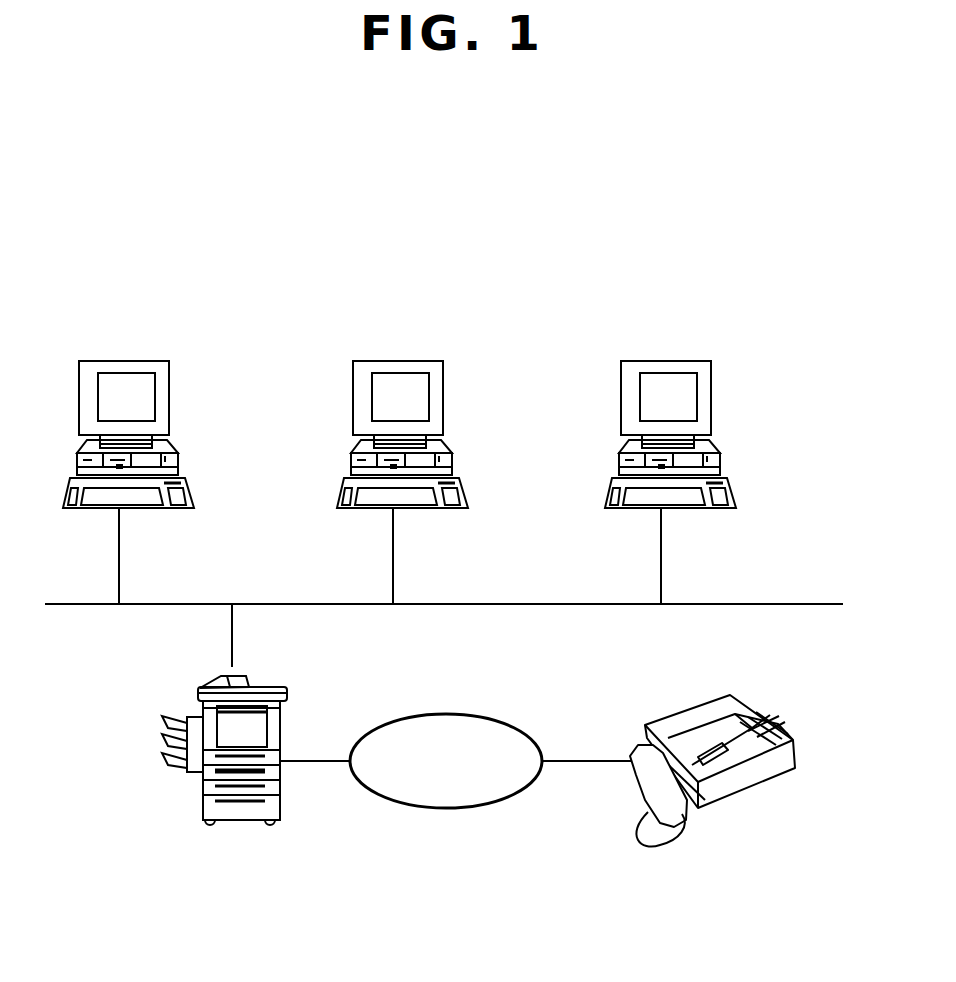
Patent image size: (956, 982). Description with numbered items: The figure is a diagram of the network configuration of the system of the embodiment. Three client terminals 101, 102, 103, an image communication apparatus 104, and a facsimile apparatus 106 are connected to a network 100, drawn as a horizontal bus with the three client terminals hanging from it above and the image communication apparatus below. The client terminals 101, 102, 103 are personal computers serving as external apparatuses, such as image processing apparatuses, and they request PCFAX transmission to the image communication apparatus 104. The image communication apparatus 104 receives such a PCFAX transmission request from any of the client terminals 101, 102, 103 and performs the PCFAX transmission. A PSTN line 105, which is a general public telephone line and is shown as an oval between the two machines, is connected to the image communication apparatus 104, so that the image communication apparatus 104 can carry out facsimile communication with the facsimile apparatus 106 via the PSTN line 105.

The network 100 is at (577, 603).
The client terminal 101 is at (124, 361).
The client terminal 102 is at (398, 361).
The client terminal 103 is at (666, 361).
The image communication apparatus 104 is at (280, 687).
The PSTN line 105 is at (450, 810).
The facsimile apparatus 106 is at (722, 695).